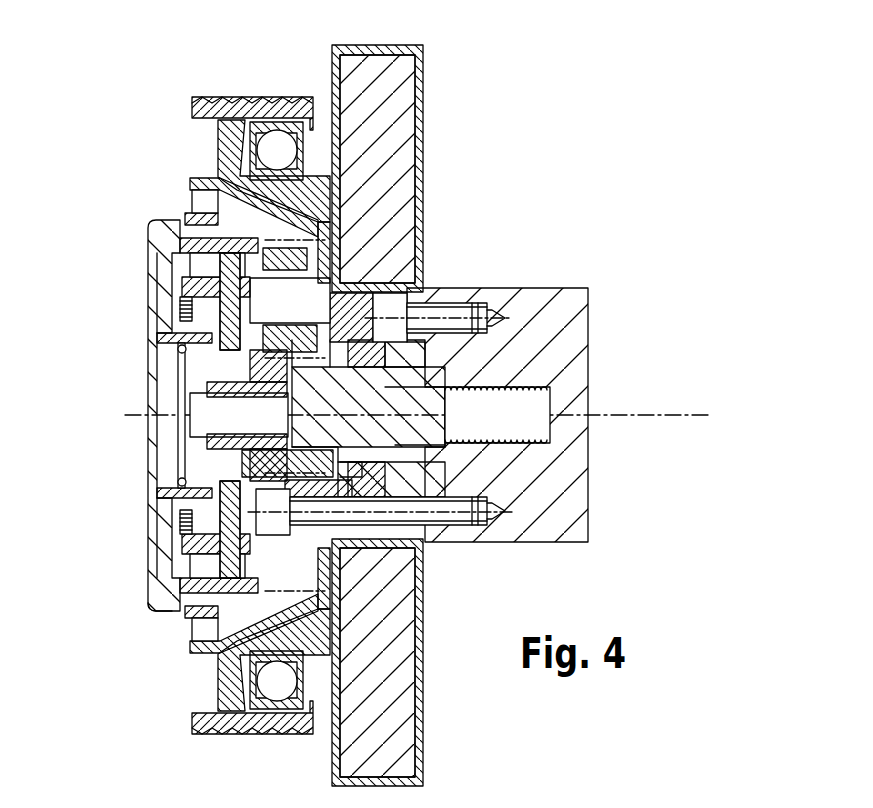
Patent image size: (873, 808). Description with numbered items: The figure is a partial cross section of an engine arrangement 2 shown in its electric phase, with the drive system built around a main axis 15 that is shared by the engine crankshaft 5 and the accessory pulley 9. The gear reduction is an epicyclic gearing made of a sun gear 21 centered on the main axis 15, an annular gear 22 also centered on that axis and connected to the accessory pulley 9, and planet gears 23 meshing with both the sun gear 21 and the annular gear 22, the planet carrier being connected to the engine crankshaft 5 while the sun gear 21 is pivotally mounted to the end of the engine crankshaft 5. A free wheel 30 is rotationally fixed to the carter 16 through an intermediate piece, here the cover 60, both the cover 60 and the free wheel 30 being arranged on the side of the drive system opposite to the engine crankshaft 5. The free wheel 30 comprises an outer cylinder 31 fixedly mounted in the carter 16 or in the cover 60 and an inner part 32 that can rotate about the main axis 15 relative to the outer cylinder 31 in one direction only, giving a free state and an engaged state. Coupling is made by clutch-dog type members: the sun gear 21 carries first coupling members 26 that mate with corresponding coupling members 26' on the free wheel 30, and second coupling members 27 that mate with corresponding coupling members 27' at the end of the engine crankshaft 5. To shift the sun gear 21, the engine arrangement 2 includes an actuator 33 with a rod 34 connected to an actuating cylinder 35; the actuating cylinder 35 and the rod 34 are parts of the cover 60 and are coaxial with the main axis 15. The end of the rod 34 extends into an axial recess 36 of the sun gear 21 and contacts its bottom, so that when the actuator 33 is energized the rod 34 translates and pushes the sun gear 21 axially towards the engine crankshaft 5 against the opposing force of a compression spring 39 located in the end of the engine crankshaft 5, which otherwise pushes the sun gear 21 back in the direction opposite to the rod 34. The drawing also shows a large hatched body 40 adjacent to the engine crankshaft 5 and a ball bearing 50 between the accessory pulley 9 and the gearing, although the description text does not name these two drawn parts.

The engine arrangement 2 is at (542, 198).
The engine crankshaft 5 is at (542, 300).
The accessory pulley 9 is at (228, 143).
The main axis 15 is at (681, 413).
The carter 16 is at (150, 515).
The sun gear 21 is at (308, 373).
The annular gear 22 is at (200, 615).
The planet gears 23 is at (300, 268).
The first coupling members 26 is at (154, 415).
The coupling members 26' is at (156, 400).
The second coupling members 27 is at (392, 409).
The coupling members 27' is at (389, 422).
The free wheel 30 is at (185, 563).
The outer cylinder 31 is at (190, 217).
The inner part 32 is at (185, 255).
The actuator 33 is at (142, 433).
The rod 34 is at (267, 428).
The actuating cylinder 35 is at (165, 401).
The axial recess 36 is at (285, 437).
The compression spring 39 is at (548, 398).
The flywheel 40 is at (397, 137).
The bearing 50 is at (277, 150).
The cover 60 is at (160, 594).